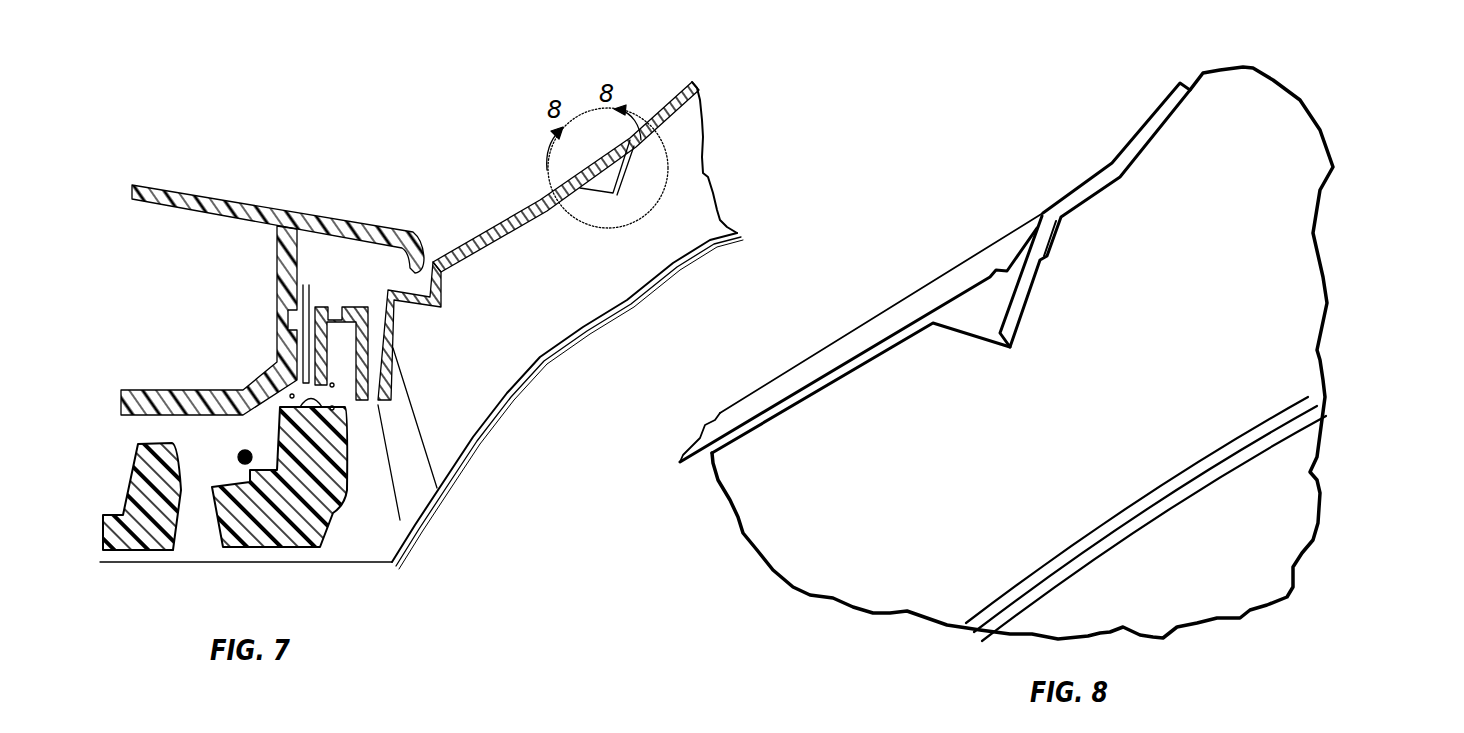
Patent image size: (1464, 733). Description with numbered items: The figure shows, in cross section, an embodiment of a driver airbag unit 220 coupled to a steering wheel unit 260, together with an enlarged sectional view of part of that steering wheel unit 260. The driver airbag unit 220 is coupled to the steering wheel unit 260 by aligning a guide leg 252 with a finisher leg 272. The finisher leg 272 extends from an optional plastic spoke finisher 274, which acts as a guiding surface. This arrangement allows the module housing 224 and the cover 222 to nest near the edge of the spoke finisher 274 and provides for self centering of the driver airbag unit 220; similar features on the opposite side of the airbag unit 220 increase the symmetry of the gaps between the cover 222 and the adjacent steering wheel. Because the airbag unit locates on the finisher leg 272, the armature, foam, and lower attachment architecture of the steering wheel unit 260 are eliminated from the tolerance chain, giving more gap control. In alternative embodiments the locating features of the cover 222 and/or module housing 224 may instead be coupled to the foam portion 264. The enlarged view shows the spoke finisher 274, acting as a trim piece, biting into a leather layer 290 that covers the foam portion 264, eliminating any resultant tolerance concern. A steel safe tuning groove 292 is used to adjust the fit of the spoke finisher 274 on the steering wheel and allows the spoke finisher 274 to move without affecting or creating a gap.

In FIG. 7, the driver airbag unit 220 is at (272, 188).
In FIG. 7, the cover 222 is at (235, 196).
In FIG. 7, the module housing 224 is at (273, 292).
In FIG. 7, the guide leg 252 is at (400, 520).
In FIG. 7, the steering wheel unit 260 is at (510, 434).
In FIG. 7, the foam portion 264 is at (560, 302).
In FIG. 8, the foam portion 264 is at (1242, 307).
In FIG. 7, the finisher leg 272 is at (393, 348).
In FIG. 7, the spoke finisher 274 is at (476, 236).
In FIG. 8, the spoke finisher 274 is at (953, 283).
In FIG. 7, the leather layer 290 is at (607, 167).
In FIG. 8, the leather layer 290 is at (1085, 178).
In FIG. 8, the tuning groove 292 is at (1057, 236).